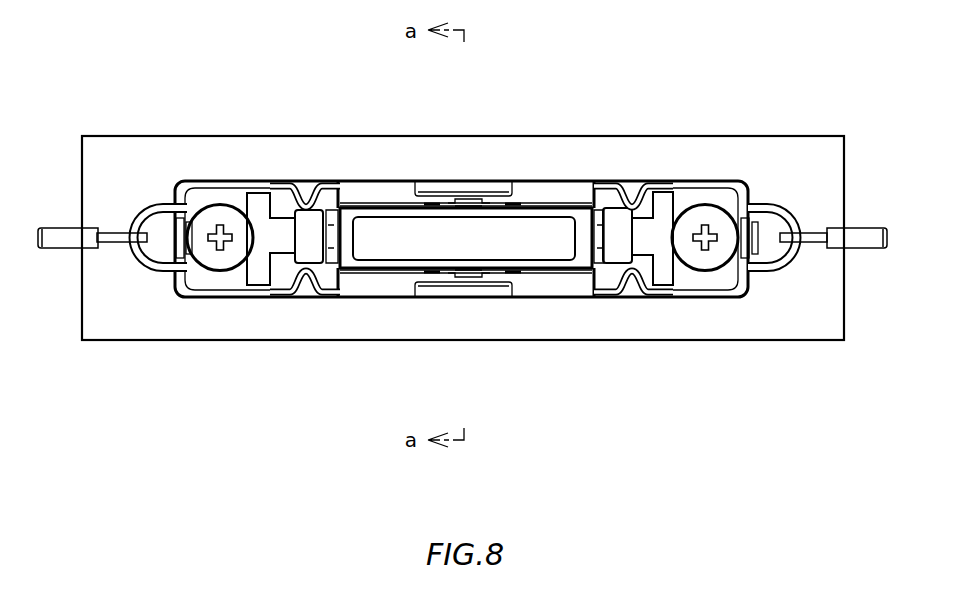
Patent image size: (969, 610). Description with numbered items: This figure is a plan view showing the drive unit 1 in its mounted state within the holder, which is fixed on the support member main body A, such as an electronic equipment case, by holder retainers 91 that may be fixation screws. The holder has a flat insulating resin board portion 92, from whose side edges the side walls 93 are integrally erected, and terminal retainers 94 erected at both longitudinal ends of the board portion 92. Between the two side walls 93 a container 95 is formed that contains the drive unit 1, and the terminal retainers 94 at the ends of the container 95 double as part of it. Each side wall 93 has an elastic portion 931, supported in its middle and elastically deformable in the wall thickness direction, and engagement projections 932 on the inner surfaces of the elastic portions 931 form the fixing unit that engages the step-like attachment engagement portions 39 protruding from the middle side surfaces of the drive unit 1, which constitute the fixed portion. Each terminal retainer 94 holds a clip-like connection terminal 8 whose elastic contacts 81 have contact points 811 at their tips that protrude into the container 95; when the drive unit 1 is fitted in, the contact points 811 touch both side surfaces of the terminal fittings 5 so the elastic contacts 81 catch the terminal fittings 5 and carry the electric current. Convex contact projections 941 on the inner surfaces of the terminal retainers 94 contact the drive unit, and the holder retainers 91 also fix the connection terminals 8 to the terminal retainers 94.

The drive unit 1 is at (512, 262).
The terminal fitting 5 is at (338, 190).
The clip-like connection terminal 8 is at (795, 210).
The elastic contact 81 is at (248, 183).
The contact point 811 is at (312, 233).
The holder retainer 91 is at (737, 200).
The board portion 92 is at (590, 296).
The side wall 93 is at (548, 188).
The elastic portion 931 is at (435, 190).
The engagement projection 932 is at (463, 203).
The terminal retainer 94 is at (722, 215).
The contact projection 941 is at (284, 233).
The container 95 is at (372, 292).
The attachment engagement portion 39 is at (494, 197).
The support member main body A is at (828, 337).